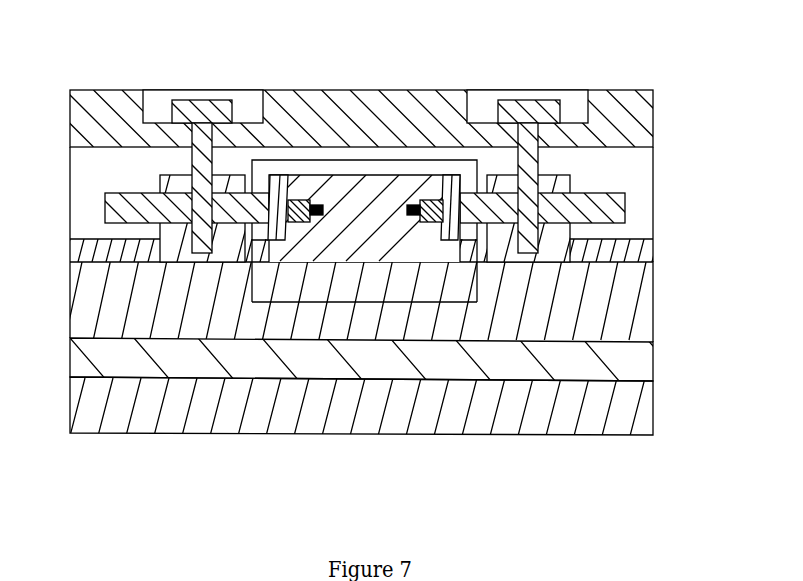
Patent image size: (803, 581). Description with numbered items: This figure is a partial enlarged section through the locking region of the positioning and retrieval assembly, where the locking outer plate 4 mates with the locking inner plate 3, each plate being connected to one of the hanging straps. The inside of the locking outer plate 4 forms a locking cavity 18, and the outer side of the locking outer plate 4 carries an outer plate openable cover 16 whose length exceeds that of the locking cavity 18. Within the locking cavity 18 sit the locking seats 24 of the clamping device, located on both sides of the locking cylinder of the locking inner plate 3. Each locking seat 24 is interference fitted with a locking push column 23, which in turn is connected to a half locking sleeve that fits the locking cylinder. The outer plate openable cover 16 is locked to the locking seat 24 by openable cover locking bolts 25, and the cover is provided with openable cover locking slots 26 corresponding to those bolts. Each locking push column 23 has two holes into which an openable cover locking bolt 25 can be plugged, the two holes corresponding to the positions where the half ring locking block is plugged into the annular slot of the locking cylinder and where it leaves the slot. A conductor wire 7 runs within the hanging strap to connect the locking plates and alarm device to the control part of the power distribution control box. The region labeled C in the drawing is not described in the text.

The locking cavity 18 is at (120, 165).
The openable cover locking slot 26 is at (250, 105).
The outer plate openable cover 16 is at (347, 113).
The locking seat 24 is at (512, 185).
The openable cover locking bolt 25 is at (540, 113).
The locking push column 23 is at (600, 207).
The locking outer plate 4 is at (97, 262).
The conductor wire 7 is at (185, 357).
The locking inner plate 3 is at (397, 392).
The chip module C is at (468, 292).